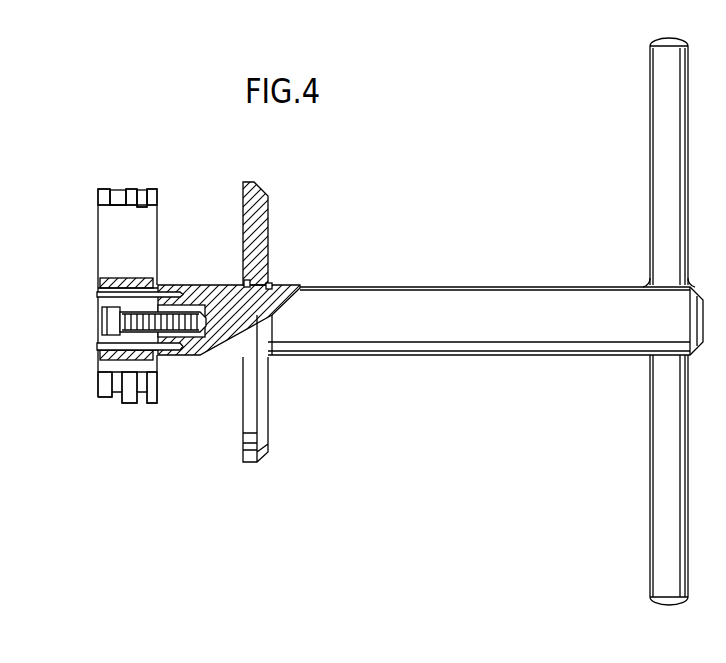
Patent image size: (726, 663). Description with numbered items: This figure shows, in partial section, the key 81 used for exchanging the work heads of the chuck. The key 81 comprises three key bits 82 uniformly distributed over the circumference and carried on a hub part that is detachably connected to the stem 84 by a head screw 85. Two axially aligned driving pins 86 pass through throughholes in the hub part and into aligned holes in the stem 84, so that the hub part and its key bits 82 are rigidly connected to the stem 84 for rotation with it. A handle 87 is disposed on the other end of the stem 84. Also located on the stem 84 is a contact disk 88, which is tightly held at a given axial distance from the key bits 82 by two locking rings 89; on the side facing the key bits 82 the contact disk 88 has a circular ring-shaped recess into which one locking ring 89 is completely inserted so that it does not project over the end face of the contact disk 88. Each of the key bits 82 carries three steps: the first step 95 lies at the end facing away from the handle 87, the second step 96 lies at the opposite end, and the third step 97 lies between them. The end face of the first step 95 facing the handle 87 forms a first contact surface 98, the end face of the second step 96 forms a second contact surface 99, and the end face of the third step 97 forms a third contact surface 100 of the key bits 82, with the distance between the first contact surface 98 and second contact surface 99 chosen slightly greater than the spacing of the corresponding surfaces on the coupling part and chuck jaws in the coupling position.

The key 81 is at (478, 160).
The key bits 82 is at (88, 261).
The stem 84 is at (383, 340).
The head screw 85 is at (102, 320).
The driving pins 86 is at (100, 293).
The handle 87 is at (656, 176).
The contact disk 88 is at (262, 410).
The locking rings 89 is at (243, 283).
The first step 95 is at (100, 200).
The second step 96 is at (156, 190).
The third step 97 is at (128, 189).
The first contact surface 98 is at (112, 195).
The second contact surface 99 is at (140, 195).
The third contact surface 100 is at (140, 208).